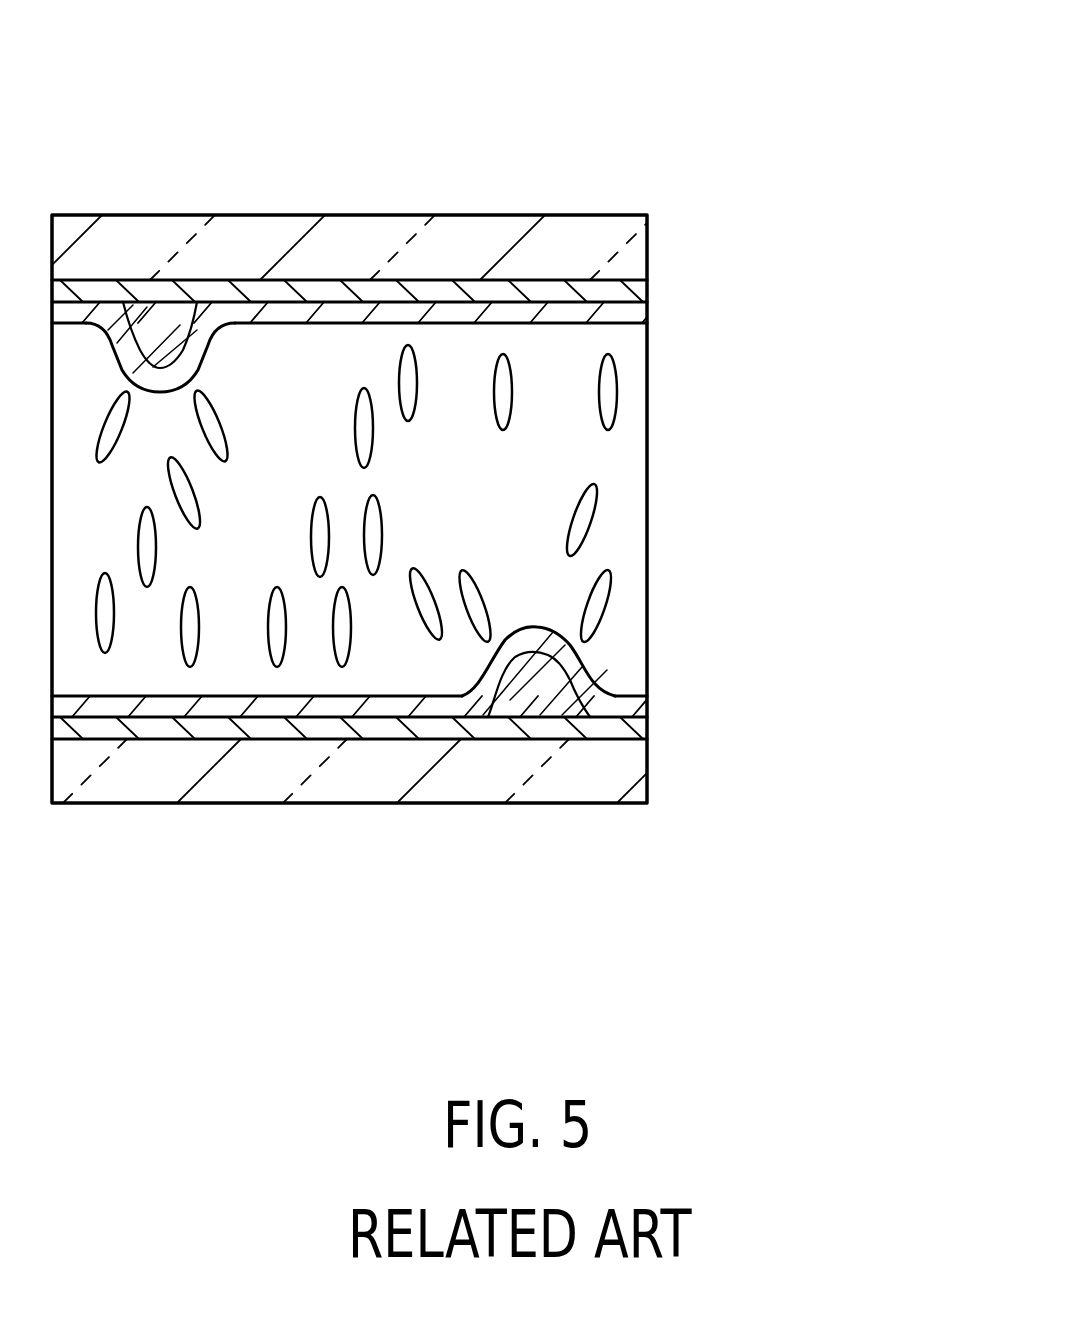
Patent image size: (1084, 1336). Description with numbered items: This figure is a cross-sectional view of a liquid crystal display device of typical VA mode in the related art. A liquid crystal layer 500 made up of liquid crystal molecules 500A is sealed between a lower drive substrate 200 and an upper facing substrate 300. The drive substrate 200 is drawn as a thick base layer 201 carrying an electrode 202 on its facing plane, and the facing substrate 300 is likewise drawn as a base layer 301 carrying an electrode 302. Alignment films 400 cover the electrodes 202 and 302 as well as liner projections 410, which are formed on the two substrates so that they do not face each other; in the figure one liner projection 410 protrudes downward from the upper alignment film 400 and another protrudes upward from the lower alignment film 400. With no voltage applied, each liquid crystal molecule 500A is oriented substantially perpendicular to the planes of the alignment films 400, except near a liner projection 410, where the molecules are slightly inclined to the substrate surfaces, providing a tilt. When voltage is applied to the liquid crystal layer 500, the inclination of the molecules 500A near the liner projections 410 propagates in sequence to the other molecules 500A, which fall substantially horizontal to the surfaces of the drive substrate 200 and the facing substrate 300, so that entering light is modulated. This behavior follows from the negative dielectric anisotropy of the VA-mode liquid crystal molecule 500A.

The drive substrate 200 is at (485, 947).
The substrate 201 is at (435, 778).
The electrode 202 is at (323, 728).
The facing substrate 300 is at (533, 72).
The substrate 301 is at (363, 242).
The electrode 302 is at (477, 292).
The alignment film 400 is at (648, 307).
The liner projection 410 is at (160, 335).
The liquid crystal layer 500 is at (838, 323).
The liquid crystal molecule 500A is at (578, 521).